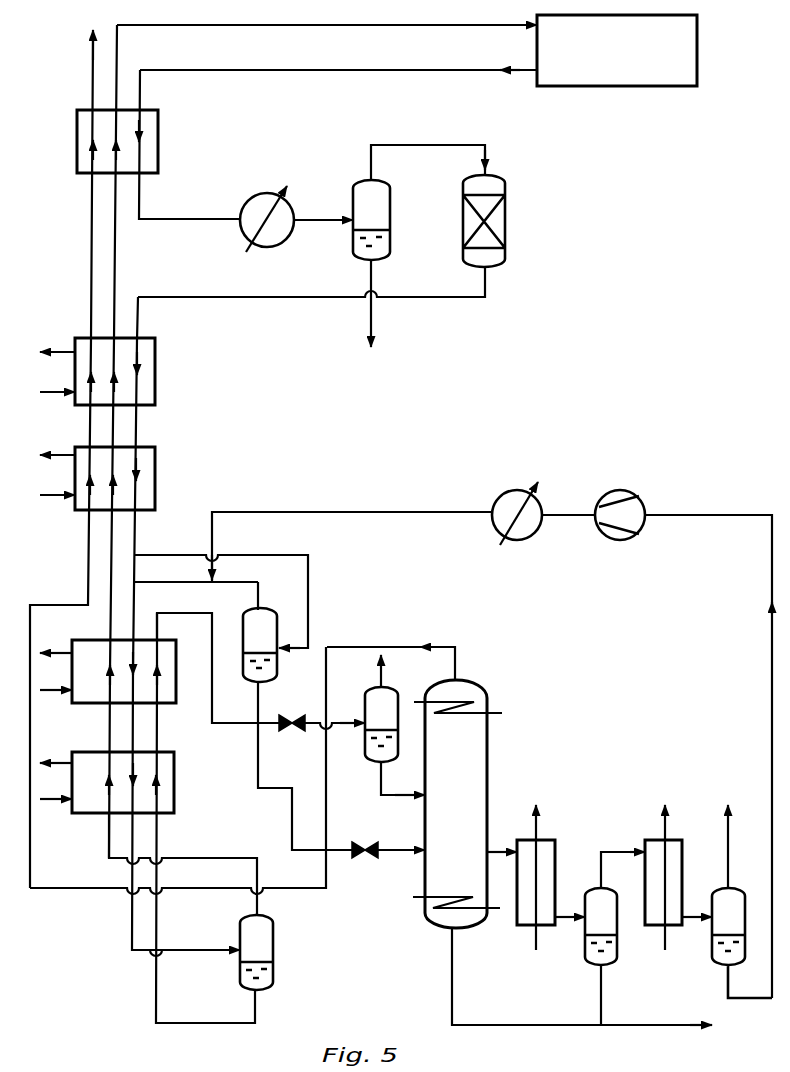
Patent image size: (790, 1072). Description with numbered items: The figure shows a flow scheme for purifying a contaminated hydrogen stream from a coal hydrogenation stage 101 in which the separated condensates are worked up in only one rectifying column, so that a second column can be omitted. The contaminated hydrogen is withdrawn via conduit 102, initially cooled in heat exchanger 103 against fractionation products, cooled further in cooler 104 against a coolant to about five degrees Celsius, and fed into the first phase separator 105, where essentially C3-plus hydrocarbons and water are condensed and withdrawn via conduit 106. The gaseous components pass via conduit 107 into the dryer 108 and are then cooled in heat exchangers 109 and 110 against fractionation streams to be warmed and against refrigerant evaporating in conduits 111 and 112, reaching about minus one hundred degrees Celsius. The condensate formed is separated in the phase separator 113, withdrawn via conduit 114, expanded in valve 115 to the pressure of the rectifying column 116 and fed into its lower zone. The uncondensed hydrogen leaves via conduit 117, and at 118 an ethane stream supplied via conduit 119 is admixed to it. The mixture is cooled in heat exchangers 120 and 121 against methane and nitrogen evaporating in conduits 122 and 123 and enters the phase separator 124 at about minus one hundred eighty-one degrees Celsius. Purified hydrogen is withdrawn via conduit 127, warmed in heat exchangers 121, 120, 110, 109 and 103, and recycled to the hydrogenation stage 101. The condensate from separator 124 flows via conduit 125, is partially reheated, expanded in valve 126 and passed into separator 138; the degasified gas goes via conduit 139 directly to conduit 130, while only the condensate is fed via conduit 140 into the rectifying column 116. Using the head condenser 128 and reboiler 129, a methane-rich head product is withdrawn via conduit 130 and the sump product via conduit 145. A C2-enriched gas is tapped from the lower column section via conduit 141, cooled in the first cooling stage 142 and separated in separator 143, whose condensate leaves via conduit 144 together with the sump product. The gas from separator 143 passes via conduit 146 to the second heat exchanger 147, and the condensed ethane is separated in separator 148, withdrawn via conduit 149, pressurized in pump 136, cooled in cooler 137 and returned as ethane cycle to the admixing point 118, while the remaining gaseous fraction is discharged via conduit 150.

The coal hydrogenation stage 101 is at (617, 88).
The conduit 102 is at (310, 72).
The heat exchanger 103 is at (158, 146).
The cooler 104 is at (254, 201).
The first phase separator 105 is at (390, 204).
The conduit 106 is at (370, 285).
The conduit 107 is at (425, 143).
The dryer 108 is at (505, 215).
The heat exchanger 109 is at (155, 372).
The heat exchanger 110 is at (155, 478).
The conduit 111 is at (52, 392).
The conduit 112 is at (48, 495).
The phase separator 113 is at (277, 661).
The conduit 114 is at (257, 757).
The valve 115 is at (365, 859).
The rectifying column 116 is at (487, 755).
The conduit 117 is at (258, 607).
The admixing point 118 is at (212, 582).
The conduit 119 is at (347, 511).
The heat exchanger 120 is at (163, 700).
The heat exchanger 121 is at (174, 800).
The conduit 122 is at (48, 692).
The conduit 123 is at (47, 800).
The phase separator 124 is at (273, 945).
The conduit 125 is at (255, 1005).
The valve 126 is at (290, 733).
The conduit 127 is at (230, 858).
The head condenser 128 is at (497, 713).
The reboiler 129 is at (490, 912).
The conduit 130 is at (406, 646).
The pump 136 is at (619, 491).
The cooler 137 is at (511, 491).
The separator 138 is at (366, 705).
The conduit 139 is at (386, 672).
The conduit 140 is at (379, 798).
The conduit 141 is at (493, 850).
The first cooling stage 142 is at (559, 855).
The separator 143 is at (617, 942).
The conduit 144 is at (601, 998).
The conduit 145 is at (538, 1025).
The conduit 146 is at (617, 852).
The second heat exchanger 147 is at (683, 856).
The separator 148 is at (713, 951).
The conduit 149 is at (768, 738).
The conduit 150 is at (733, 836).